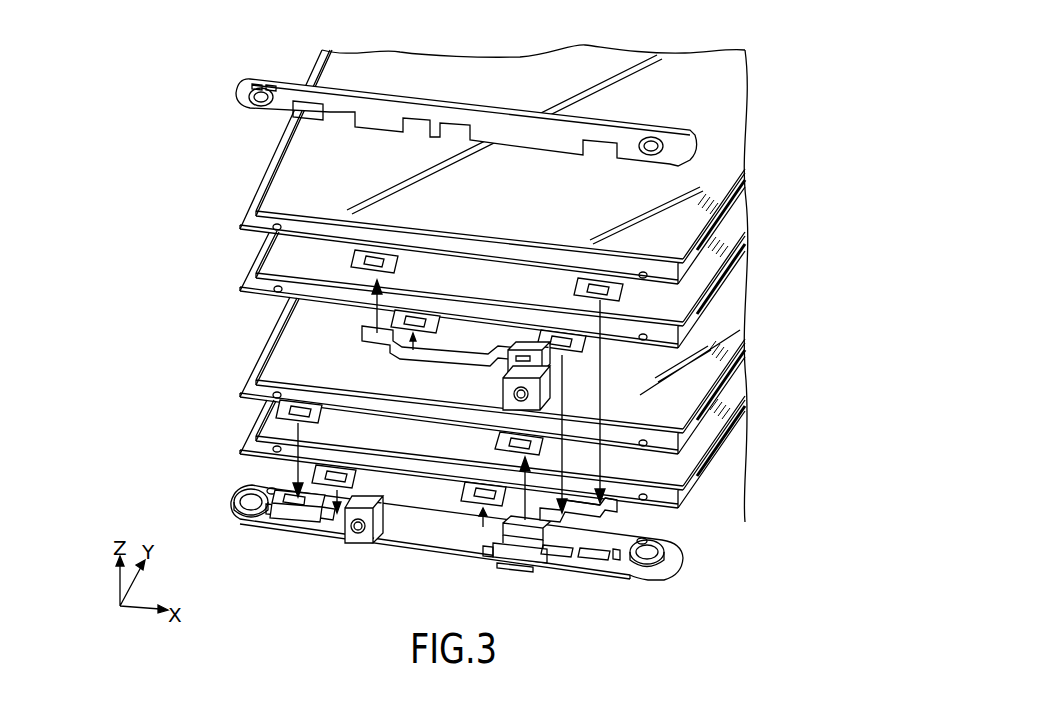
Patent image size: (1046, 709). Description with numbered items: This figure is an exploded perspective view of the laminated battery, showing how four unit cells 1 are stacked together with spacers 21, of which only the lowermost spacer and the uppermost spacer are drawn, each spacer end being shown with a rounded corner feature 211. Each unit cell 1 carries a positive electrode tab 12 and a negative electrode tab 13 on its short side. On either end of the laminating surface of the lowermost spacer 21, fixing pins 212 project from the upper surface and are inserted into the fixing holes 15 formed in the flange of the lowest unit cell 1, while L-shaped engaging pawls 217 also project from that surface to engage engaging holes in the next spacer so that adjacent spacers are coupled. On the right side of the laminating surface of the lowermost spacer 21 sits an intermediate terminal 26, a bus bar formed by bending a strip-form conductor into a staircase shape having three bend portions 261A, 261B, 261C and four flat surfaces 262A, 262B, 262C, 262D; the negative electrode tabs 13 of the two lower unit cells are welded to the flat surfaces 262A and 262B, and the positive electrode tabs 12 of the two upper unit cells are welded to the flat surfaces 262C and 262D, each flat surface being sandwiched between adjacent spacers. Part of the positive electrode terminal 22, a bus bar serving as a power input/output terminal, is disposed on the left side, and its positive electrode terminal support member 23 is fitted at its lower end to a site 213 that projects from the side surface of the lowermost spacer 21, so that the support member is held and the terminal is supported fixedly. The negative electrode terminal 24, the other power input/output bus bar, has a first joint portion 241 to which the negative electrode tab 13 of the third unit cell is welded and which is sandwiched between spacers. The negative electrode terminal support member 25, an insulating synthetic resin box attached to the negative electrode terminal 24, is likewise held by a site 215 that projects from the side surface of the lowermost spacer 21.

The unit cell 1 is at (240, 214).
The positive electrode tab 12 is at (578, 284).
The negative electrode tab 13 is at (360, 262).
The fixing hole 15 is at (272, 449).
The spacer 21 is at (292, 63).
The through hole 211 is at (246, 97).
The fixing pin 212 is at (267, 492).
The site (first holding portion) 213 is at (358, 538).
The site (first holding portion) 215 is at (512, 570).
The engaging pawl 217 is at (268, 516).
The positive electrode terminal 22 is at (337, 528).
The positive electrode terminal support member 23 is at (378, 548).
The negative electrode terminal 24 is at (530, 394).
The first joint portion 241 is at (405, 355).
The negative electrode terminal support member 25 is at (520, 368).
The intermediate terminal 26 is at (612, 511).
The bend portion 261A is at (490, 558).
The bend portion 261B is at (555, 560).
The bend portion 261C is at (596, 562).
The flat surface 262A is at (503, 532).
The flat surface 262B is at (500, 552).
The flat surface 262C is at (583, 502).
The flat surface 262D is at (608, 507).